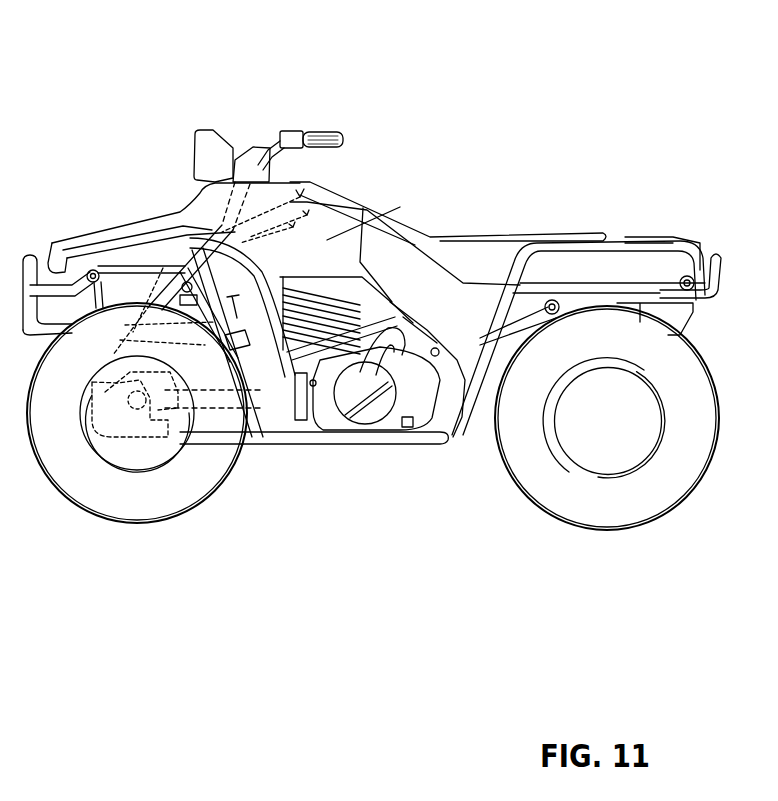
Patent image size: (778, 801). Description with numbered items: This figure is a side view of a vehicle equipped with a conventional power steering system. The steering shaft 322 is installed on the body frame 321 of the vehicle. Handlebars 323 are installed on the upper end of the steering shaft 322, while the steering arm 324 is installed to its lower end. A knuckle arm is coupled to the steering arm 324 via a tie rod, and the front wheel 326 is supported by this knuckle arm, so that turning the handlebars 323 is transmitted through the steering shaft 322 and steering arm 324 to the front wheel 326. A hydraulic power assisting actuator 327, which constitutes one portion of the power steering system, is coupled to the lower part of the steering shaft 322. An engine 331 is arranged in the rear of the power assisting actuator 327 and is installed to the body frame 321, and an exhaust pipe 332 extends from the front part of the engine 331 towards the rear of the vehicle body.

The body frame 321 is at (247, 318).
The steering shaft 322 is at (233, 335).
The handlebars 323 is at (262, 165).
The steering arm 324 is at (152, 325).
The front wheel 326 is at (72, 500).
The hydraulic power assisting actuator 327 is at (268, 282).
The engine 331 is at (283, 281).
The exhaust pipe 332 is at (343, 343).